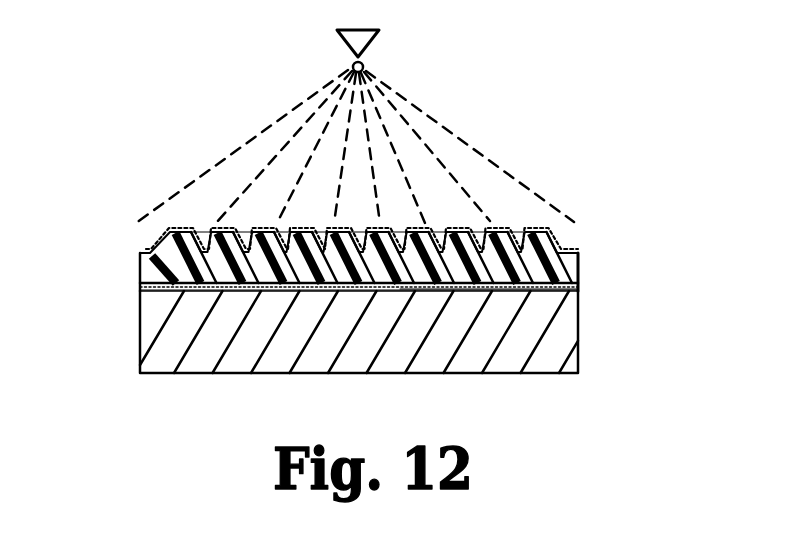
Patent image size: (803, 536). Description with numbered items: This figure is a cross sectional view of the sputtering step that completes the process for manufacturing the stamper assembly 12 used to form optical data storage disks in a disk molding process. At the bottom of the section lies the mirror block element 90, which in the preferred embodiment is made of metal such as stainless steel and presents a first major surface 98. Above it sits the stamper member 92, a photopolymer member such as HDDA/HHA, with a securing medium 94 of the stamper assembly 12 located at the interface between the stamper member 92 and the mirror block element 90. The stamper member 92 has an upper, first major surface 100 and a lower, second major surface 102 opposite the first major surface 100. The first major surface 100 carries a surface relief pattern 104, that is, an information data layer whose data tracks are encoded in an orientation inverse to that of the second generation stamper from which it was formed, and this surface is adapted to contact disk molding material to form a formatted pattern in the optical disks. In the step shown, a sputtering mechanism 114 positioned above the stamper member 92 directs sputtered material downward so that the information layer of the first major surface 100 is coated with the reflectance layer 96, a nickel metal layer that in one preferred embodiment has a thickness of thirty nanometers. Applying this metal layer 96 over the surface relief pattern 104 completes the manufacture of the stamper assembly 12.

The stamper assembly 12 is at (668, 217).
The mirror block element 90 is at (558, 352).
The stamper member 92 is at (140, 257).
The securing medium 94 is at (580, 289).
The reflectance layer 96 is at (165, 247).
The first major surface 98 is at (152, 287).
The first major surface 100 is at (546, 246).
The second major surface 102 is at (516, 292).
The surface relief pattern 104 is at (438, 201).
The sputtering mechanism 114 is at (353, 43).